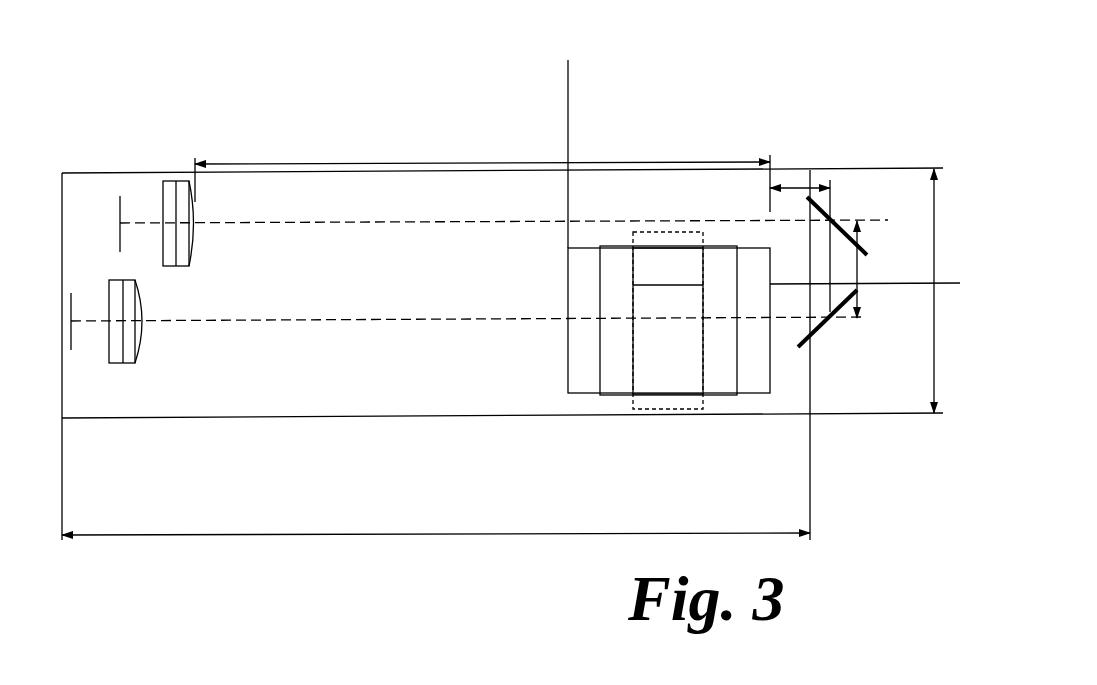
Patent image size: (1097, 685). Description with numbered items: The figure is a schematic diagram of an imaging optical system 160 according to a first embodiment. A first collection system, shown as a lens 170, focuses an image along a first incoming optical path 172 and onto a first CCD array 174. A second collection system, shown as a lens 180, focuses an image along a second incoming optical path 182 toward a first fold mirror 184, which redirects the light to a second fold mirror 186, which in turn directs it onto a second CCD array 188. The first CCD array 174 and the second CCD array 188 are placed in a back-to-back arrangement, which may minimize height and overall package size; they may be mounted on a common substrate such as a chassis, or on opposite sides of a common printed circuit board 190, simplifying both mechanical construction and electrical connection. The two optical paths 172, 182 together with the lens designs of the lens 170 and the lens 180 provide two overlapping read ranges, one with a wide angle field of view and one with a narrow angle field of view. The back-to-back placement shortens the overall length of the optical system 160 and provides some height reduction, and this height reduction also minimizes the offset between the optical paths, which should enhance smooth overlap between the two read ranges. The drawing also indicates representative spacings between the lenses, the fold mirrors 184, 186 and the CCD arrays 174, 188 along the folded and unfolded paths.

The optical system 160 is at (607, 88).
The lens 170 is at (128, 347).
The first incoming optical path 172 is at (457, 318).
The first CCD array 174 is at (583, 346).
The lens 180 is at (170, 213).
The second incoming optical path 182 is at (435, 222).
The first fold mirror 184 is at (858, 222).
The second fold mirror 186 is at (812, 330).
The second CCD array 188 is at (755, 375).
The printed circuit board 190 is at (668, 410).